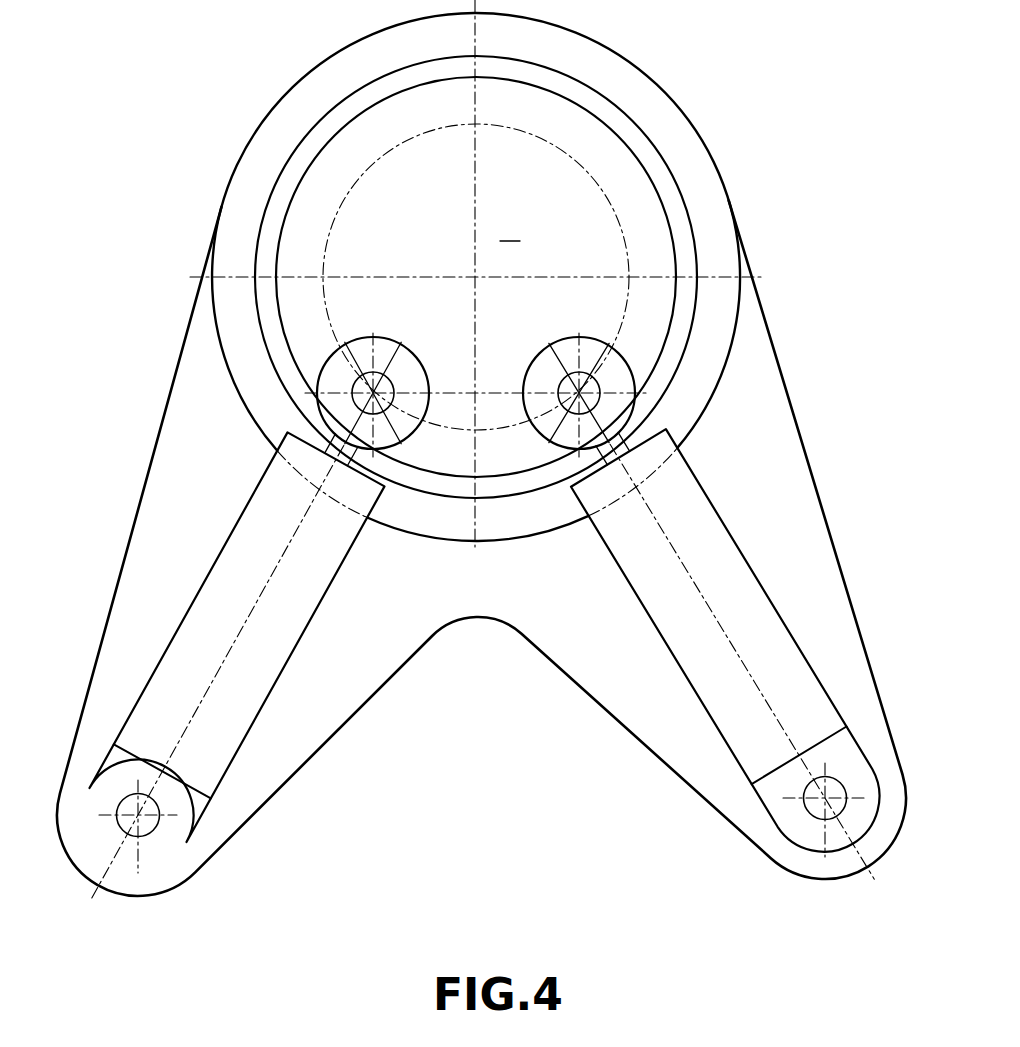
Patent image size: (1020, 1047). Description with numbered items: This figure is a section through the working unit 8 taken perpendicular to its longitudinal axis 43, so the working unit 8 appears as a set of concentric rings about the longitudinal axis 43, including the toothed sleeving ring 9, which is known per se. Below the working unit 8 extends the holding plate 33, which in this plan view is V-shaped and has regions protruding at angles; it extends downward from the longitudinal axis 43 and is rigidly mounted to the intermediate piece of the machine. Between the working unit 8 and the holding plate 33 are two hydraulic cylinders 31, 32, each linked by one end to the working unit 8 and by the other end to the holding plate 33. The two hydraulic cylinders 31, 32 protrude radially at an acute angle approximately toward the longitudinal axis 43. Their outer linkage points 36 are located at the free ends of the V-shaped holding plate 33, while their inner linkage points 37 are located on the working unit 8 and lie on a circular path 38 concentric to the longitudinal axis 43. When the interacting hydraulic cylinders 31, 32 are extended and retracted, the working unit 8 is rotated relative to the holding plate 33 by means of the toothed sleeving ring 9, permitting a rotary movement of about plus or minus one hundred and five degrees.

The working unit 8 is at (510, 227).
The toothed sleeving ring 9 is at (653, 160).
The hydraulic cylinder 31 is at (178, 628).
The hydraulic cylinder 32 is at (763, 585).
The holding plate 33 is at (313, 755).
The outer linkage points 36 is at (145, 822).
The inner linkage points 37 is at (557, 391).
The circular path 38 is at (343, 195).
The longitudinal axis 43 is at (473, 277).